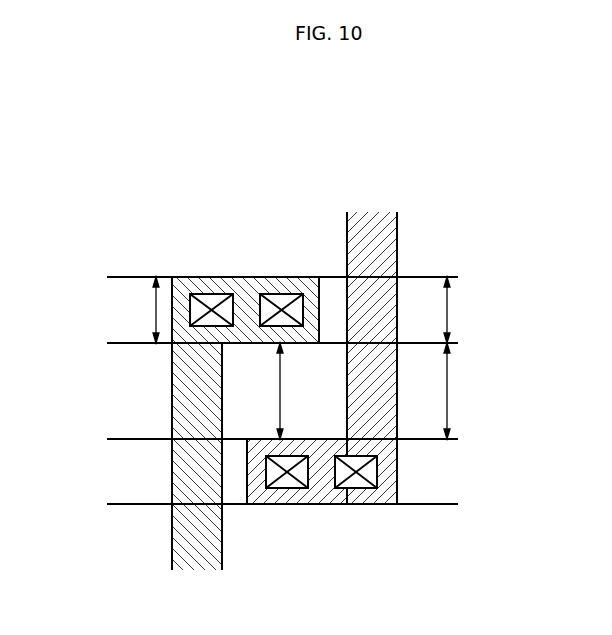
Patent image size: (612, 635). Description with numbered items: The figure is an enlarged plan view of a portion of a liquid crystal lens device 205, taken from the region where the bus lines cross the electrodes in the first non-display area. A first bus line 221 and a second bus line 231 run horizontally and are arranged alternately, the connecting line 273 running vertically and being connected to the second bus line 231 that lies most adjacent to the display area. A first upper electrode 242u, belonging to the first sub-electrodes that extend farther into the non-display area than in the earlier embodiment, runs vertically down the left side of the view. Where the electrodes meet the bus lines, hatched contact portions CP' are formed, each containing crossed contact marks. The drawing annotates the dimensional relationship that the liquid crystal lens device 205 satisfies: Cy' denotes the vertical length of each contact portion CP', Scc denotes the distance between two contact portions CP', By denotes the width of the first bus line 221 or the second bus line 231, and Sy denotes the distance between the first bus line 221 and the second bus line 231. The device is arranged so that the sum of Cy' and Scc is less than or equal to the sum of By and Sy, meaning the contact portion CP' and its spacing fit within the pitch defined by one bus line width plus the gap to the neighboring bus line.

The liquid crystal lens device 205 is at (506, 211).
The first bus line 221 is at (121, 313).
The second bus line 231 is at (121, 470).
The first upper electrode 242u is at (172, 552).
The connecting line 273 is at (397, 228).
The contact portion CP' is at (245, 278).
The vertical length of contact portion Cy' is at (143, 283).
The width of bus line By is at (462, 310).
The distance between first and second bus lines Sy is at (463, 391).
The distance between contact portions Scc is at (298, 391).